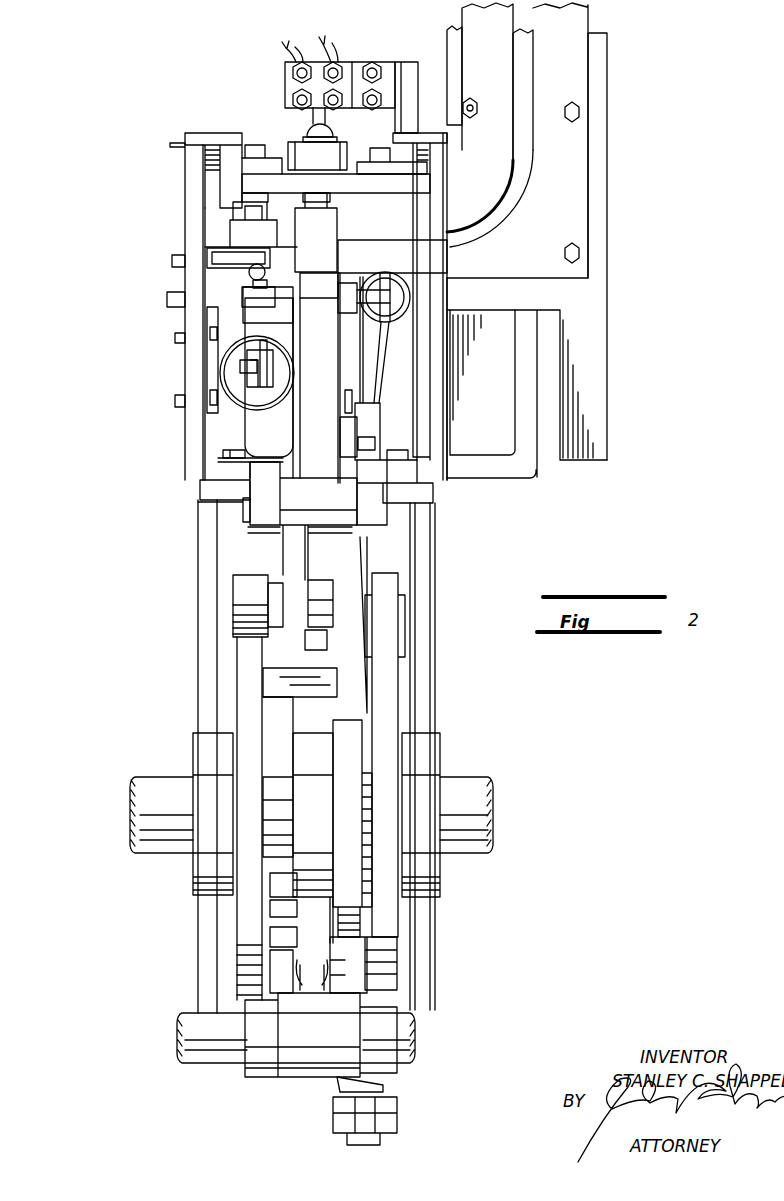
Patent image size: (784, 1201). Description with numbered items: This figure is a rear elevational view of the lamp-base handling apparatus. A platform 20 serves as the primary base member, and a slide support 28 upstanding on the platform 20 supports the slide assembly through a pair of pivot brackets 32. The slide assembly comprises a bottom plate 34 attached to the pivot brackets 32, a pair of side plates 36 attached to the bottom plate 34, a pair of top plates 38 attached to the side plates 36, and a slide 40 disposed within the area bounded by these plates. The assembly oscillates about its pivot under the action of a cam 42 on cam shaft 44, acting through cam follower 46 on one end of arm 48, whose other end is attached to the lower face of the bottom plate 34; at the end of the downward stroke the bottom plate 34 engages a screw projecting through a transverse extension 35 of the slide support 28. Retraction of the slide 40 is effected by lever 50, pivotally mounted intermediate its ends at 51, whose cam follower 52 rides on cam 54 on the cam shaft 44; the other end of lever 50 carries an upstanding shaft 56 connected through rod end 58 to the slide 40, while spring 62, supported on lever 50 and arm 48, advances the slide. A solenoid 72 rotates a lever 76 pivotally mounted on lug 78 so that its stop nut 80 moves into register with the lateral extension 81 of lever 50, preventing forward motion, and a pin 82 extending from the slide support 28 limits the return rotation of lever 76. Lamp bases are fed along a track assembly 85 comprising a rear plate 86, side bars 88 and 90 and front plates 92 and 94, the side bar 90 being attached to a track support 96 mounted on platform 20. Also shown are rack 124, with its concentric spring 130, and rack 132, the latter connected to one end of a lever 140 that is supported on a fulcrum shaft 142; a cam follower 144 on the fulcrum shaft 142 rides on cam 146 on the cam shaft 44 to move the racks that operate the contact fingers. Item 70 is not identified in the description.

The platform 20 is at (197, 642).
The slide support 28 is at (193, 158).
The pivot brackets 32 is at (230, 133).
The bottom plate 34 is at (288, 198).
The transverse extension 35 is at (412, 258).
The side plates 36 is at (248, 190).
The top plates 38 is at (282, 157).
The slide 40 is at (347, 162).
The cam 42 is at (393, 662).
The cam shaft 44 is at (470, 785).
The cam follower 46 is at (403, 608).
The arm 48 is at (363, 545).
The lever 50 is at (316, 587).
The pivot 51 is at (245, 508).
The cam follower 52 is at (250, 594).
The cam 54 is at (245, 702).
The shaft 56 is at (298, 118).
The rod end 58 is at (298, 136).
The spring 62 is at (408, 304).
The block 70 is at (327, 296).
The solenoid 72 is at (220, 368).
The lever 76 is at (255, 342).
The lug 78 is at (215, 305).
The stop nut 80 is at (270, 267).
The lateral extension 81 is at (286, 325).
The pin 82 is at (175, 258).
The track assembly 85 is at (649, 74).
The rear plate 86 is at (530, 44).
The side bar 88 is at (452, 43).
The side bar 90 is at (607, 118).
The front plate 92 is at (462, 14).
The front plate 94 is at (590, 15).
The track support 96 is at (545, 468).
The rack 124 is at (380, 1140).
The spring 130 is at (383, 1085).
The rack 132 is at (268, 653).
The lever 140 is at (315, 1078).
The fulcrum shaft 142 is at (220, 1062).
The cam follower 144 is at (350, 987).
The cam 146 is at (347, 785).